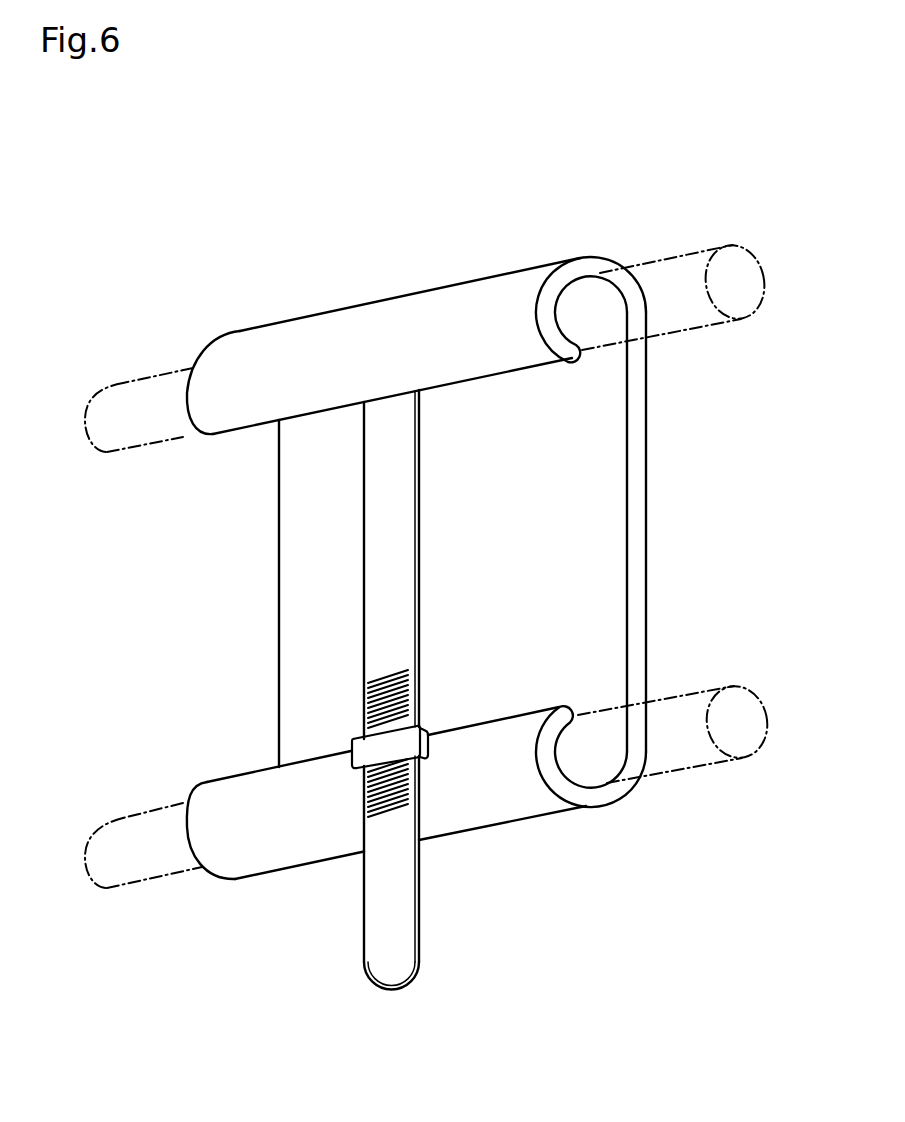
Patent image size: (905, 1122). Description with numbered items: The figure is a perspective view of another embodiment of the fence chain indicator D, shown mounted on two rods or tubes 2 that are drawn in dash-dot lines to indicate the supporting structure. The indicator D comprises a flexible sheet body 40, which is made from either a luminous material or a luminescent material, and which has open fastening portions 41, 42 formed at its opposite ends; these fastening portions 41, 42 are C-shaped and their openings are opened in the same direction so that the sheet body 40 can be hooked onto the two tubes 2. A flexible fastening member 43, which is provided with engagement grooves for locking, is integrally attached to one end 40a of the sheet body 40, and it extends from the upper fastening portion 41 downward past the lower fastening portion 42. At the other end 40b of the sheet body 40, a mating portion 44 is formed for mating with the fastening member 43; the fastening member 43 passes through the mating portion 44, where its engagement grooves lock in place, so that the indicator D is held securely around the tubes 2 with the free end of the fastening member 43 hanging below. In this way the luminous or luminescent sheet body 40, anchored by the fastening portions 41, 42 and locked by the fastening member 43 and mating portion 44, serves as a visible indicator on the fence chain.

The fence chain indicator D is at (388, 204).
The tube 2 is at (667, 258).
The flexible sheet body 40 is at (601, 532).
The one end of sheet body 40a is at (443, 390).
The other end of sheet body 40b is at (428, 735).
The fastening portion 41 is at (510, 283).
The fastening portion 42 is at (505, 797).
The flexible fastening member 43 is at (370, 970).
The mating portion 44 is at (351, 757).